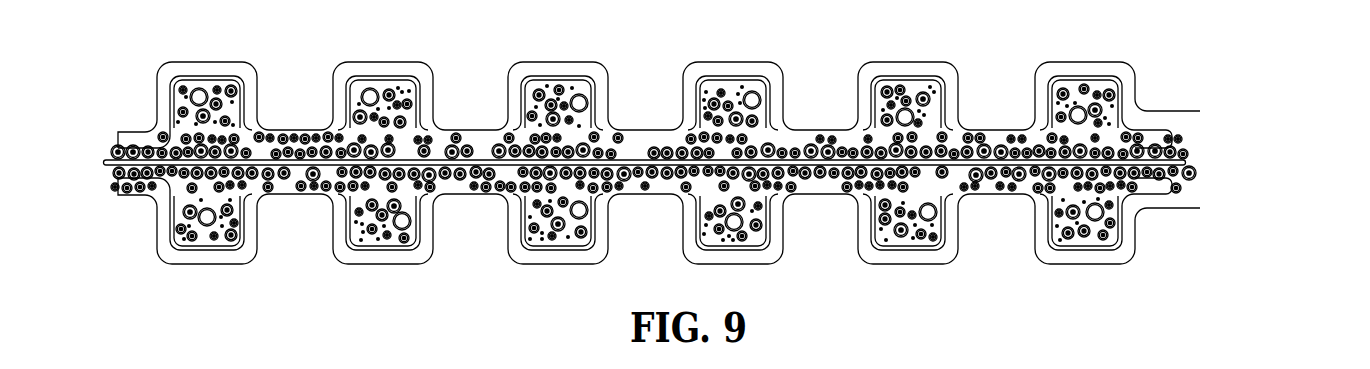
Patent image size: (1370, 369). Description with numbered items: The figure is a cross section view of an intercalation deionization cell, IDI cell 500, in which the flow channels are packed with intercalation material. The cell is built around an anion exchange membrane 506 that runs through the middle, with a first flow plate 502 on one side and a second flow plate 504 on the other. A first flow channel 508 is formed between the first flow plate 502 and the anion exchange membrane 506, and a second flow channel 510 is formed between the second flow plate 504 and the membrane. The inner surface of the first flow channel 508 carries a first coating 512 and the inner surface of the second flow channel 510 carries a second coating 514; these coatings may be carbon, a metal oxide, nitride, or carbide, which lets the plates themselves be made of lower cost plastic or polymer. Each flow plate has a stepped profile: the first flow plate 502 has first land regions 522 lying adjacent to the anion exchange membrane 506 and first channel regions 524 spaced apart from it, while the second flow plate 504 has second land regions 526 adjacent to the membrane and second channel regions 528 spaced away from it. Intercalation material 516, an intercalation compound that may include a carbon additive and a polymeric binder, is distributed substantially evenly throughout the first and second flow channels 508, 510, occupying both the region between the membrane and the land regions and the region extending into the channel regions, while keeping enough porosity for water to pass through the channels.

The IDI cell 500 is at (208, 286).
The first flow plate 502 is at (1123, 253).
The second flow plate 504 is at (1117, 67).
The anion exchange membrane 506 is at (1190, 162).
The first flow channel 508 is at (1058, 227).
The second flow channel 510 is at (1050, 128).
The first coating 512 is at (1081, 254).
The second coating 514 is at (1081, 77).
The intercalation material 516 is at (1195, 111).
The first land regions 522 is at (645, 195).
The first channel regions 524 is at (385, 268).
The second land regions 526 is at (297, 132).
The second channel regions 528 is at (207, 61).